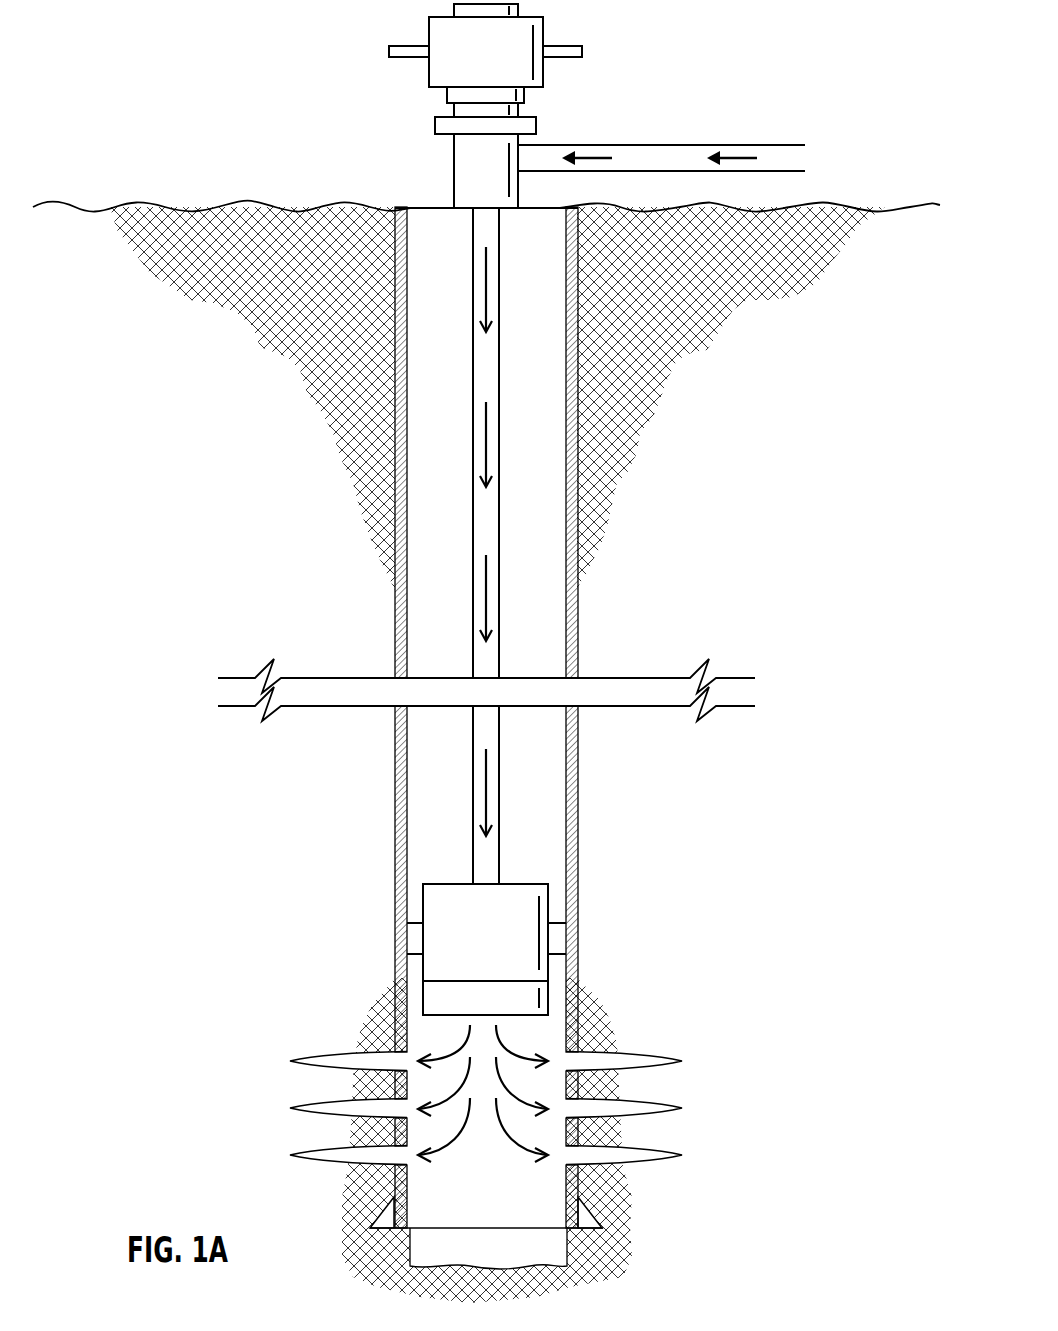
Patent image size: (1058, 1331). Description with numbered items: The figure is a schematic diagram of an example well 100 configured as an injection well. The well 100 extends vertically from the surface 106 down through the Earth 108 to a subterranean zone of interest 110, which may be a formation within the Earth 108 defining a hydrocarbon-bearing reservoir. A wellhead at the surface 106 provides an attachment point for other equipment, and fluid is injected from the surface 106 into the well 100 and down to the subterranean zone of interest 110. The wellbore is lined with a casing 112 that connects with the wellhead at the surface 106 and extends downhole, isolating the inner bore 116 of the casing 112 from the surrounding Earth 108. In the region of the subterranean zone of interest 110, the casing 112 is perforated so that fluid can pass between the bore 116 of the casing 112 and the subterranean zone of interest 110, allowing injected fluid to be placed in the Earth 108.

The well 100 is at (264, 95).
The surface 106 is at (70, 206).
The Earth 108 is at (253, 432).
The subterranean zone of interest 110 is at (760, 1035).
The casing 112 is at (395, 642).
The inner bore 116 is at (552, 638).